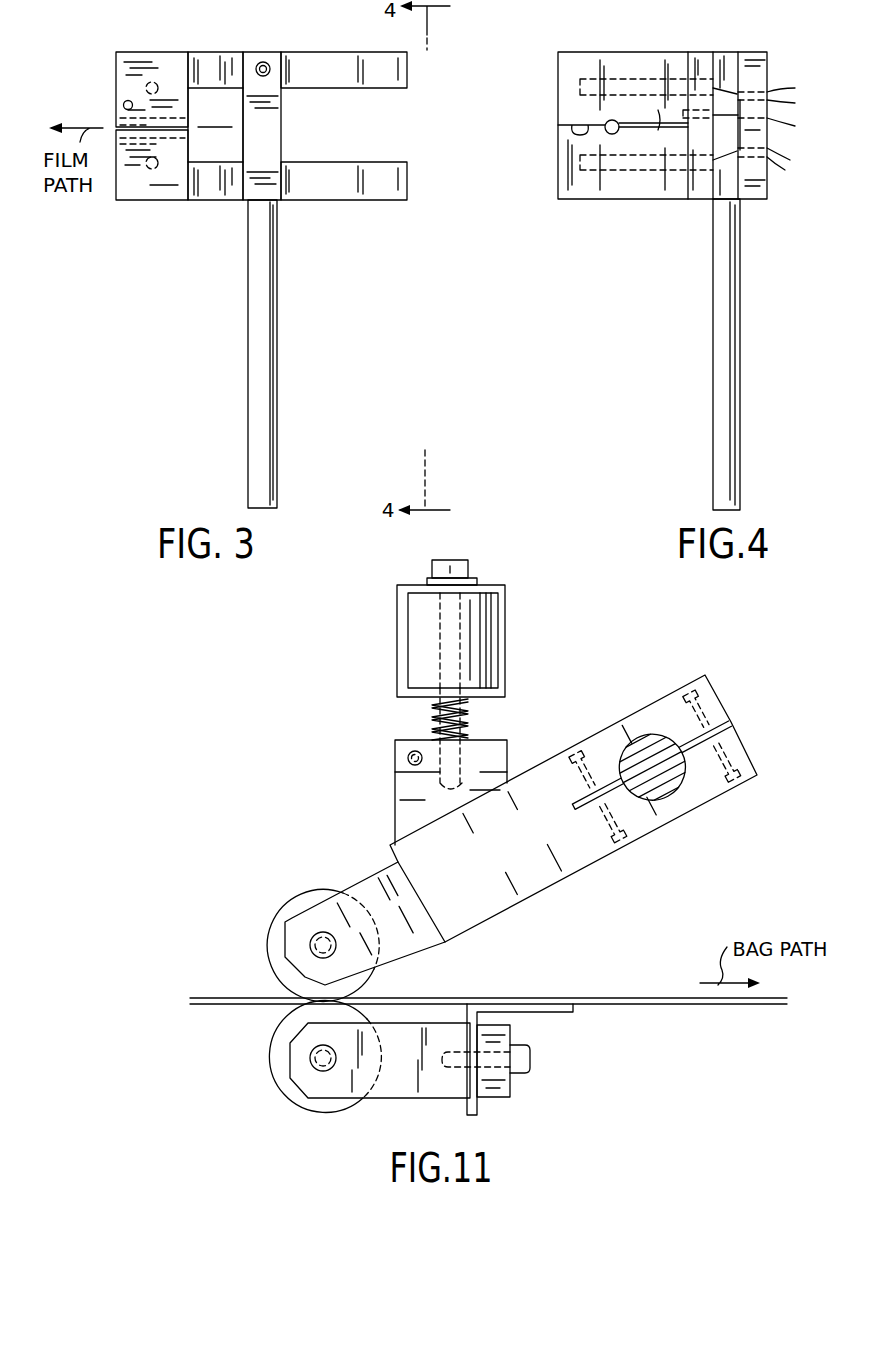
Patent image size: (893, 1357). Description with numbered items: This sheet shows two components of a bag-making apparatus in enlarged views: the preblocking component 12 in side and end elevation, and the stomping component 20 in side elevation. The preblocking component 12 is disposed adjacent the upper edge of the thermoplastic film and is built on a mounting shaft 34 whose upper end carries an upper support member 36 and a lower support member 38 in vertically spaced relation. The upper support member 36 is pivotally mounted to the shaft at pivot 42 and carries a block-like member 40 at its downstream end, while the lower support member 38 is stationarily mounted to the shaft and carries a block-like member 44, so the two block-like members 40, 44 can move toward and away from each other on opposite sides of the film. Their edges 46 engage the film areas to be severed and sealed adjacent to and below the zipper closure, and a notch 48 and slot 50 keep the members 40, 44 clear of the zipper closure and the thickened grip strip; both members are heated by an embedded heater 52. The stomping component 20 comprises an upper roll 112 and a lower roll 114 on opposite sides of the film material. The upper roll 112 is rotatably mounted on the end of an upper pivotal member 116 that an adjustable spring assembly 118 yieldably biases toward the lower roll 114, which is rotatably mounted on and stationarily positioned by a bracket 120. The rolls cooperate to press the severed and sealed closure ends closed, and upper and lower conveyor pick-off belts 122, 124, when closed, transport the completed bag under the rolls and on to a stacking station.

In FIG. 3, the preblocking component 12 is at (423, 85).
In FIG. 4, the preblocking component 12 is at (754, 33).
In FIG. 11, the stomping component 20 is at (645, 660).
In FIG. 3, the mounting shaft 34 is at (277, 368).
In FIG. 4, the mounting shaft 34 is at (740, 315).
In FIG. 3, the upper support member 36 is at (318, 63).
In FIG. 3, the lower support member 38 is at (340, 173).
In FIG. 3, the block-like member 40 is at (118, 72).
In FIG. 3, the pivotal mounting 42 is at (265, 60).
In FIG. 3, the block-like member 44 is at (157, 190).
In FIG. 4, the edges 46 is at (558, 132).
In FIG. 3, the notch 48 is at (173, 120).
In FIG. 4, the notch 48 is at (603, 123).
In FIG. 4, the slot 50 is at (660, 132).
In FIG. 3, the heater 52 is at (153, 78).
In FIG. 4, the heater 52 is at (627, 72).
In FIG. 11, the upper roll 112 is at (284, 908).
In FIG. 11, the lower roll 114 is at (268, 1067).
In FIG. 11, the upper pivotal member 116 is at (560, 878).
In FIG. 11, the adjustable spring assembly 118 is at (510, 652).
In FIG. 11, the bracket 120 is at (385, 1098).
In FIG. 11, the upper conveyor pick-off belt 122 is at (605, 996).
In FIG. 11, the lower conveyor pick-off belt 124 is at (715, 1005).